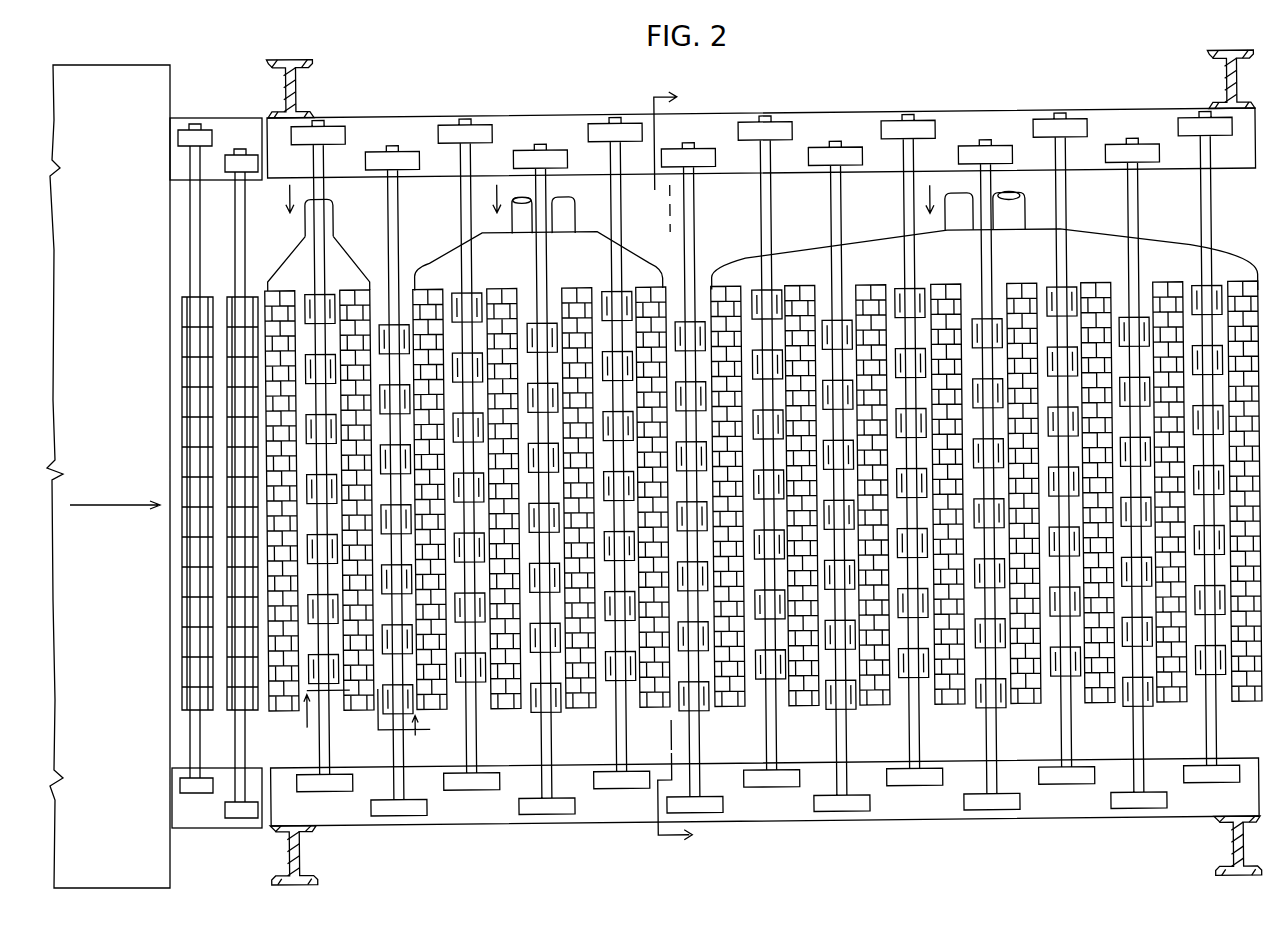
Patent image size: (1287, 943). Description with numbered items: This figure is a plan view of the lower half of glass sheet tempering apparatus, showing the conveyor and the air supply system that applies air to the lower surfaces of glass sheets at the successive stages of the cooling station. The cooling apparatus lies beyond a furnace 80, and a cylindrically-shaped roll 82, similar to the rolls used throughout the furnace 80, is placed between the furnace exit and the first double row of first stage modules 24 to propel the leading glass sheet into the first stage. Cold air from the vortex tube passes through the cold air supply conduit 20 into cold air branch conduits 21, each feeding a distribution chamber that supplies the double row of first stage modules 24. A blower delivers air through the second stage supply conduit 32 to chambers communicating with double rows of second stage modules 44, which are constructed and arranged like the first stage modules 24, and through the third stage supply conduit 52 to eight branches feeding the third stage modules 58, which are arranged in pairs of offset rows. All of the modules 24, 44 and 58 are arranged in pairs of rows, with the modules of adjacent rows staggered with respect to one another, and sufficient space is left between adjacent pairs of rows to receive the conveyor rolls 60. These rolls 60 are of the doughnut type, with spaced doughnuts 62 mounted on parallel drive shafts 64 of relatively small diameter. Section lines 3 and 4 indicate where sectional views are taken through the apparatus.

The section line 3- 3 is at (680, 467).
The section line 4- 4 is at (363, 723).
The cold air supply conduit 20 is at (333, 221).
The cold air branch conduit 21 is at (291, 262).
The first stage module 24 is at (371, 316).
The second stage supply conduit 32 is at (584, 203).
The second stage module 44 is at (512, 712).
The third stage supply conduit 52 is at (1024, 214).
The third stage module 58 is at (744, 713).
The conveyor roll 60 is at (334, 749).
The doughnut 62 is at (542, 706).
The drive shaft 64 is at (771, 731).
The furnace 80 is at (146, 53).
The cylindrically-shaped roll 82 is at (232, 300).